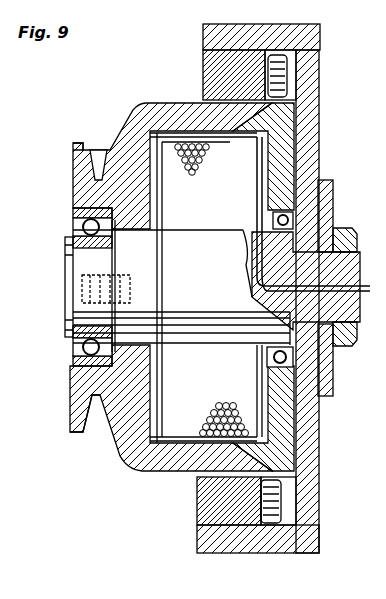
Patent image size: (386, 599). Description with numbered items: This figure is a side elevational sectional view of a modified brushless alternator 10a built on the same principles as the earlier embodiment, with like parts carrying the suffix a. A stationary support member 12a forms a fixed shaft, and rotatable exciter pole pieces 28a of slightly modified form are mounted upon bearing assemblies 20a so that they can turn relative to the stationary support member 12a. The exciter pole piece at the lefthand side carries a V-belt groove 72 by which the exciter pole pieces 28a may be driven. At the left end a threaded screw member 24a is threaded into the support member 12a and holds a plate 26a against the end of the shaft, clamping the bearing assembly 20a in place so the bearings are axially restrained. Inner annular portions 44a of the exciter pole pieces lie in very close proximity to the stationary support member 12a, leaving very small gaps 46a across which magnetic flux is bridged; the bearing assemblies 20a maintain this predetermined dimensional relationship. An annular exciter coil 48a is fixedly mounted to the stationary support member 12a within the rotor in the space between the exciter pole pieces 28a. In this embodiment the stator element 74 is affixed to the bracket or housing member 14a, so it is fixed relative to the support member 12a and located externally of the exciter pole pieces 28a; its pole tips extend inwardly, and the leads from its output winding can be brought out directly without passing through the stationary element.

The brushless alternator 10a is at (93, 98).
The stator element 74 is at (265, 53).
The exciter pole piece 28a is at (147, 122).
The V-belt groove 72 is at (99, 150).
The bearing assembly 20a is at (78, 210).
The plate 26a is at (67, 240).
The stationary support member 12a is at (133, 248).
The threaded screw member 24a is at (82, 287).
The gap 46a is at (263, 235).
The inner annular portion 44a is at (123, 362).
The bracket or housing member 14a is at (308, 443).
The exciter coil 48a is at (165, 450).